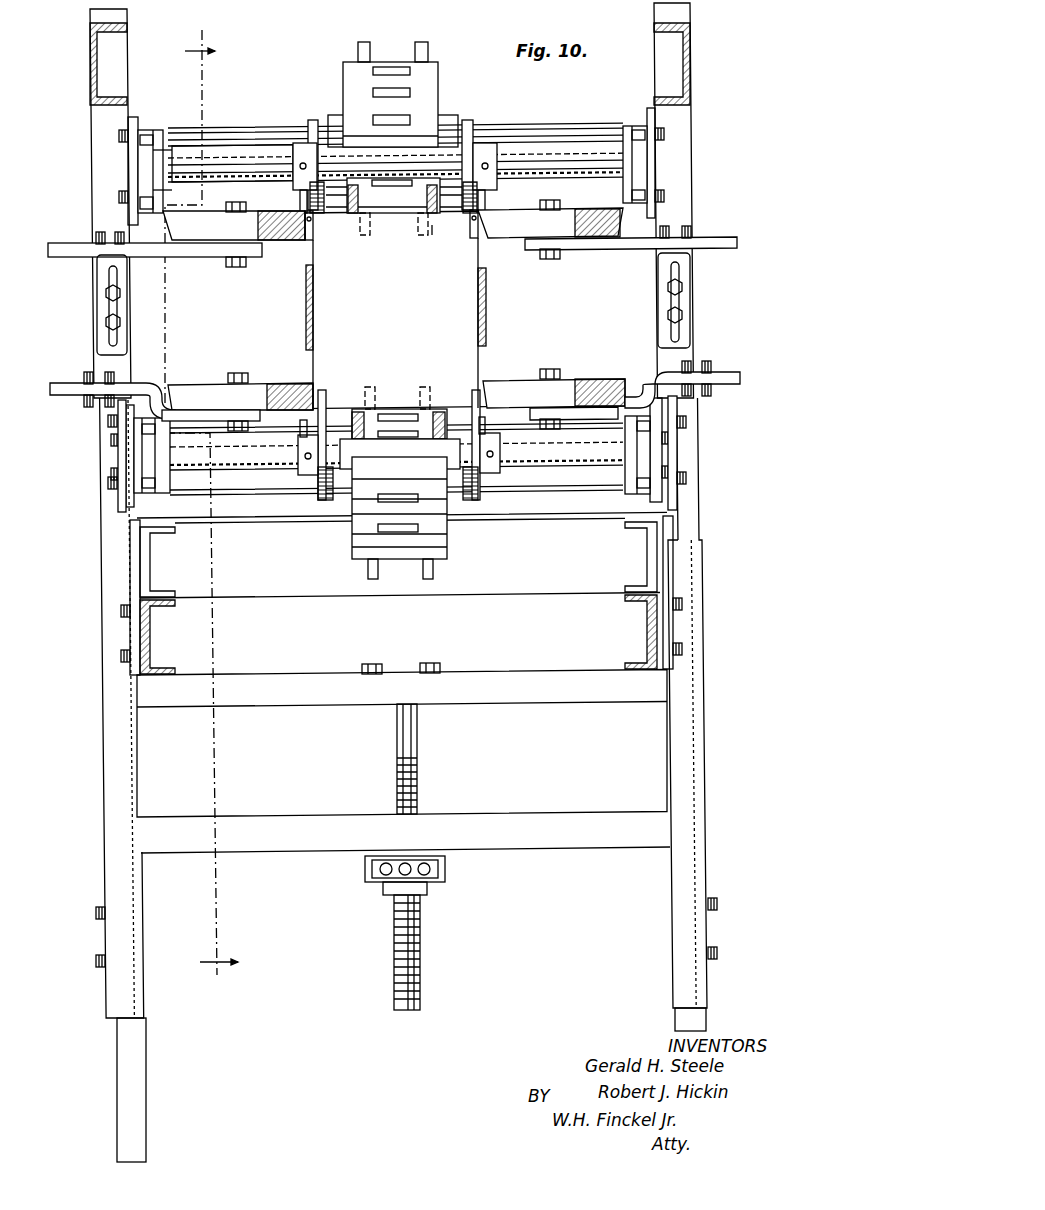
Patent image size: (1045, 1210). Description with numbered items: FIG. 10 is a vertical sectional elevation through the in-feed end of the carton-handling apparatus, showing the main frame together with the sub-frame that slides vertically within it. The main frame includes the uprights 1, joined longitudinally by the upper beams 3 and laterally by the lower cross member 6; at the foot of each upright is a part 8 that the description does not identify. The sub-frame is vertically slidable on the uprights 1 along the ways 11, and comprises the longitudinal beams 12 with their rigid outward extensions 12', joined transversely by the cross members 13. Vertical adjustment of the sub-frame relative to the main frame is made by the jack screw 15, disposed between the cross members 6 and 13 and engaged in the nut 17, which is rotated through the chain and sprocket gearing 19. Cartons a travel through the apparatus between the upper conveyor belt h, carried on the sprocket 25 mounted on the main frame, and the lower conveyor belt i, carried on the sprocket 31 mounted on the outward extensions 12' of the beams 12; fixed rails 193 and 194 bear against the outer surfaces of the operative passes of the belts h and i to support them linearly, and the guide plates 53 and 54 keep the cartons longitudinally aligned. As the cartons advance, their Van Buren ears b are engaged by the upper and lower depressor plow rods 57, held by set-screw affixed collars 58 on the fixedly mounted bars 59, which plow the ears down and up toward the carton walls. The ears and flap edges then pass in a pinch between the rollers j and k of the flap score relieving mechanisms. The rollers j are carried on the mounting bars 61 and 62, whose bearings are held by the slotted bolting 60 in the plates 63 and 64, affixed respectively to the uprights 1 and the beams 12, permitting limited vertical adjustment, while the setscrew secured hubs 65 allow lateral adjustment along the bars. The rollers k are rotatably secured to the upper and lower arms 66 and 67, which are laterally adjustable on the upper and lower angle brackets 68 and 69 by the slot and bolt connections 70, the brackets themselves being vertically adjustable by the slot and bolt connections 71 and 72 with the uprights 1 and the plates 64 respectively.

The uprights 1 is at (102, 668).
The upper beams 3 is at (90, 67).
The lower cross members 6 is at (292, 849).
The foot 8 is at (120, 1073).
The ways 11 is at (201, 506).
The longitudinal beams 12 is at (400, 634).
The outward extensions 12' is at (398, 557).
The cross members 13 is at (333, 704).
The jack screw 15 is at (418, 776).
The nut 17 is at (430, 888).
The chain and sprocket gearing 19 is at (370, 878).
The link belt sprocket 25 is at (343, 83).
The sprocket 31 is at (352, 551).
The guide plate 53 is at (486, 318).
The guide plate 54 is at (306, 321).
The depressor plow rods 57 is at (299, 198).
The set-screw affixed collars 58 is at (300, 148).
The fixedly mounted bars 59 is at (222, 156).
The slotted bolting 60 is at (121, 200).
The mounting bar 61 is at (240, 180).
The mounting bar 62 is at (562, 470).
The plate 63 is at (128, 160).
The plate 64 is at (130, 560).
The setscrew secured hubs 65 is at (306, 170).
The upper arm 66 is at (255, 250).
The lower arm 67 is at (215, 418).
The upper angle bracket 68 is at (97, 303).
The lower angle bracket 69 is at (118, 415).
The slot and bolt connections 70 is at (98, 241).
The slot and bolt connections 71 is at (120, 294).
The slot and bolt connections 72 is at (110, 424).
The fixed rails 193 is at (370, 214).
The fixed rails 194 is at (372, 412).
The cartons a is at (395, 324).
The ears b is at (311, 224).
The upper conveyor belt h is at (432, 226).
The lower conveyor belt i is at (423, 413).
The rollers j is at (314, 119).
The rollers k is at (208, 240).